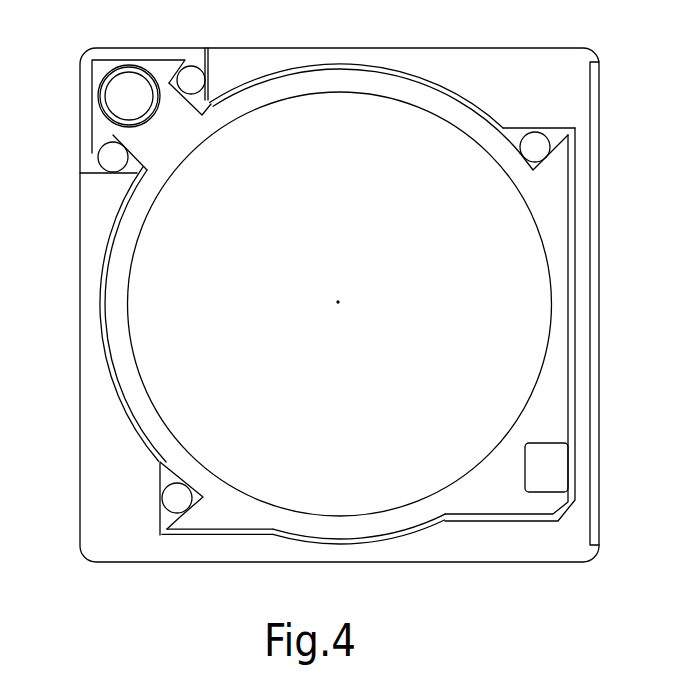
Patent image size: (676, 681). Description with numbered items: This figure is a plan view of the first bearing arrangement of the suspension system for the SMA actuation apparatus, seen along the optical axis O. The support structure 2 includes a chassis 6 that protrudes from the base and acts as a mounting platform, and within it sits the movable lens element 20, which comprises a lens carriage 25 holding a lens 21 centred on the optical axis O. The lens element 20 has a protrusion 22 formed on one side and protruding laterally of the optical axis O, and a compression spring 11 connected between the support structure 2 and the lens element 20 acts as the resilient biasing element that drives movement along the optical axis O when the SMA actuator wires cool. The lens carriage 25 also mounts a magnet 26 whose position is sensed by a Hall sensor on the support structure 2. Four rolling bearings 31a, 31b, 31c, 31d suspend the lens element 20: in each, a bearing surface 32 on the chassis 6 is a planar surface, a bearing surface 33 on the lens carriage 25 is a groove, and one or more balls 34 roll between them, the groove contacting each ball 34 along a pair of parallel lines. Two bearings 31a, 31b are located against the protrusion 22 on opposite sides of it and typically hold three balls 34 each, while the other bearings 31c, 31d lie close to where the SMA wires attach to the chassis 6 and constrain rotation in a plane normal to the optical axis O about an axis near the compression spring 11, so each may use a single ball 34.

The support structure 2 is at (92, 465).
The chassis 6 is at (92, 497).
The compression spring 11 is at (128, 68).
The lens element 20 is at (268, 518).
The lens 21 is at (355, 480).
The protrusion 22 is at (92, 75).
The lens carriage 25 is at (402, 520).
The magnet 26 is at (550, 467).
The bearing 31a is at (193, 60).
The bearing 31b is at (88, 164).
The bearing 31c is at (159, 537).
The bearing 31d is at (548, 119).
The bearing surface 32 is at (212, 100).
The bearing surface 33 is at (176, 78).
The ball 34 is at (195, 80).
The optical axis O is at (350, 317).